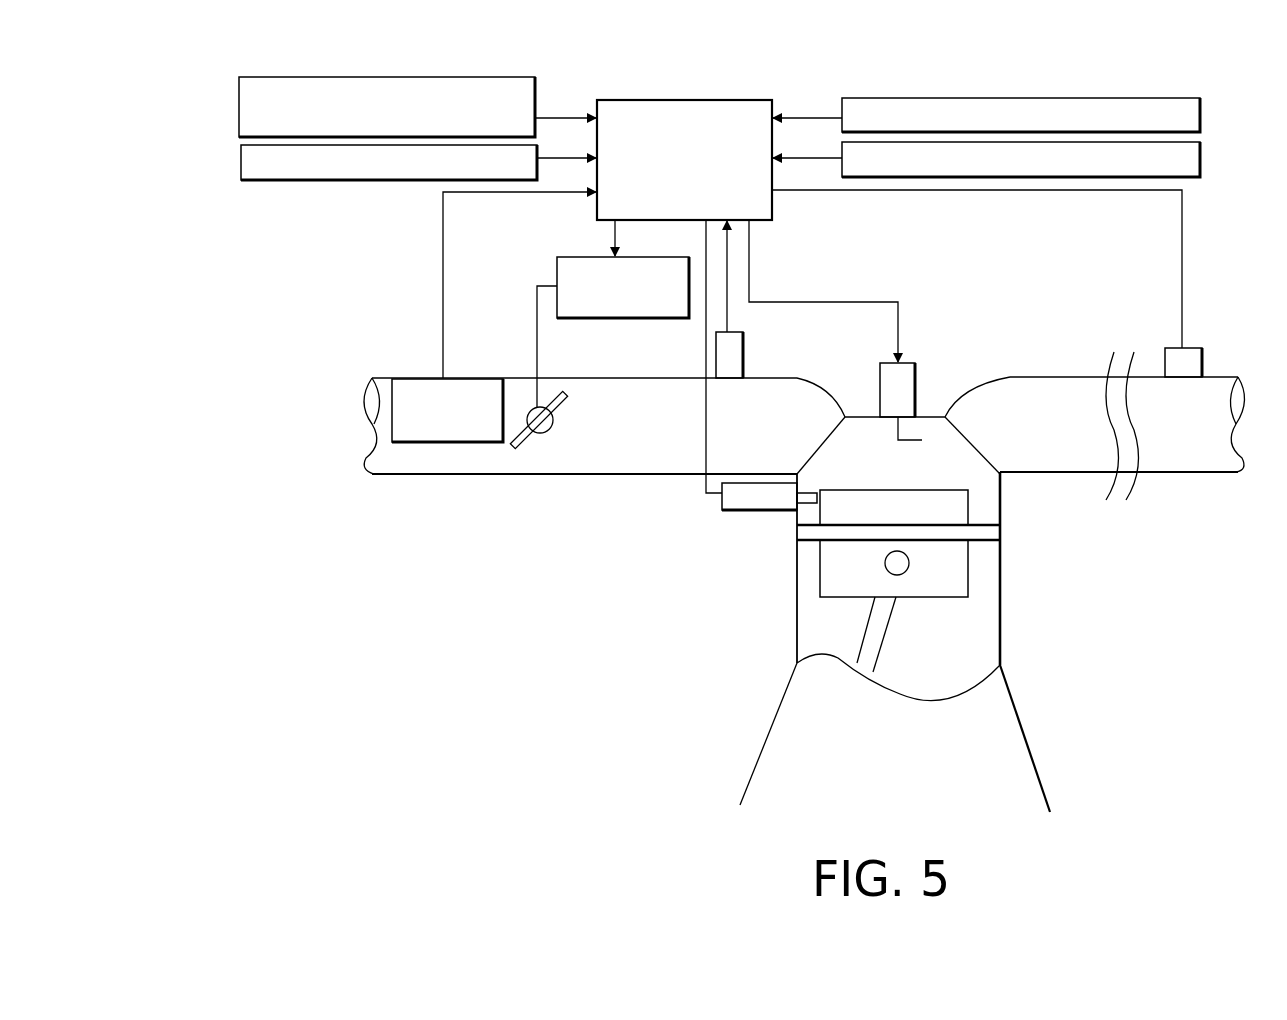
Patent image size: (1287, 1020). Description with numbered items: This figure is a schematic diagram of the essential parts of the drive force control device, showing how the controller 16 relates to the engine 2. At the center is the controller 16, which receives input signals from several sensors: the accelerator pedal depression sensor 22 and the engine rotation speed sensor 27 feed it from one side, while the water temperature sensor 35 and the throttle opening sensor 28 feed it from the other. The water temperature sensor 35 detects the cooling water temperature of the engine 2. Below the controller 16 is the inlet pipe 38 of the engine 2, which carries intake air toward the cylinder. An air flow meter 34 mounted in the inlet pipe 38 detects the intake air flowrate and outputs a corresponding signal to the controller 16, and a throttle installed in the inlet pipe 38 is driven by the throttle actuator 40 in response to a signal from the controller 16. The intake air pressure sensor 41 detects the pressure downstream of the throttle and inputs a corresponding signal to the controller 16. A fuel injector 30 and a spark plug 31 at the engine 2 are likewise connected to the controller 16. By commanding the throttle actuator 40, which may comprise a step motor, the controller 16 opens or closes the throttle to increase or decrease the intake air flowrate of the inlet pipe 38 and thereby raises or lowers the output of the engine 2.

The engine 2 is at (1042, 598).
The controller 16 is at (668, 100).
The accelerator pedal depression sensor 22 is at (514, 77).
The engine rotation speed sensor 27 is at (241, 158).
The throttle opening sensor 28 is at (1203, 161).
The fuel injector 30 is at (750, 511).
The spark plug 31 is at (915, 372).
The air flow meter 34 is at (457, 378).
The water temperature sensor 35 is at (1203, 116).
The inlet pipe 38 is at (505, 378).
The throttle actuator 40 is at (612, 318).
The intake air pressure sensor 41 is at (743, 351).